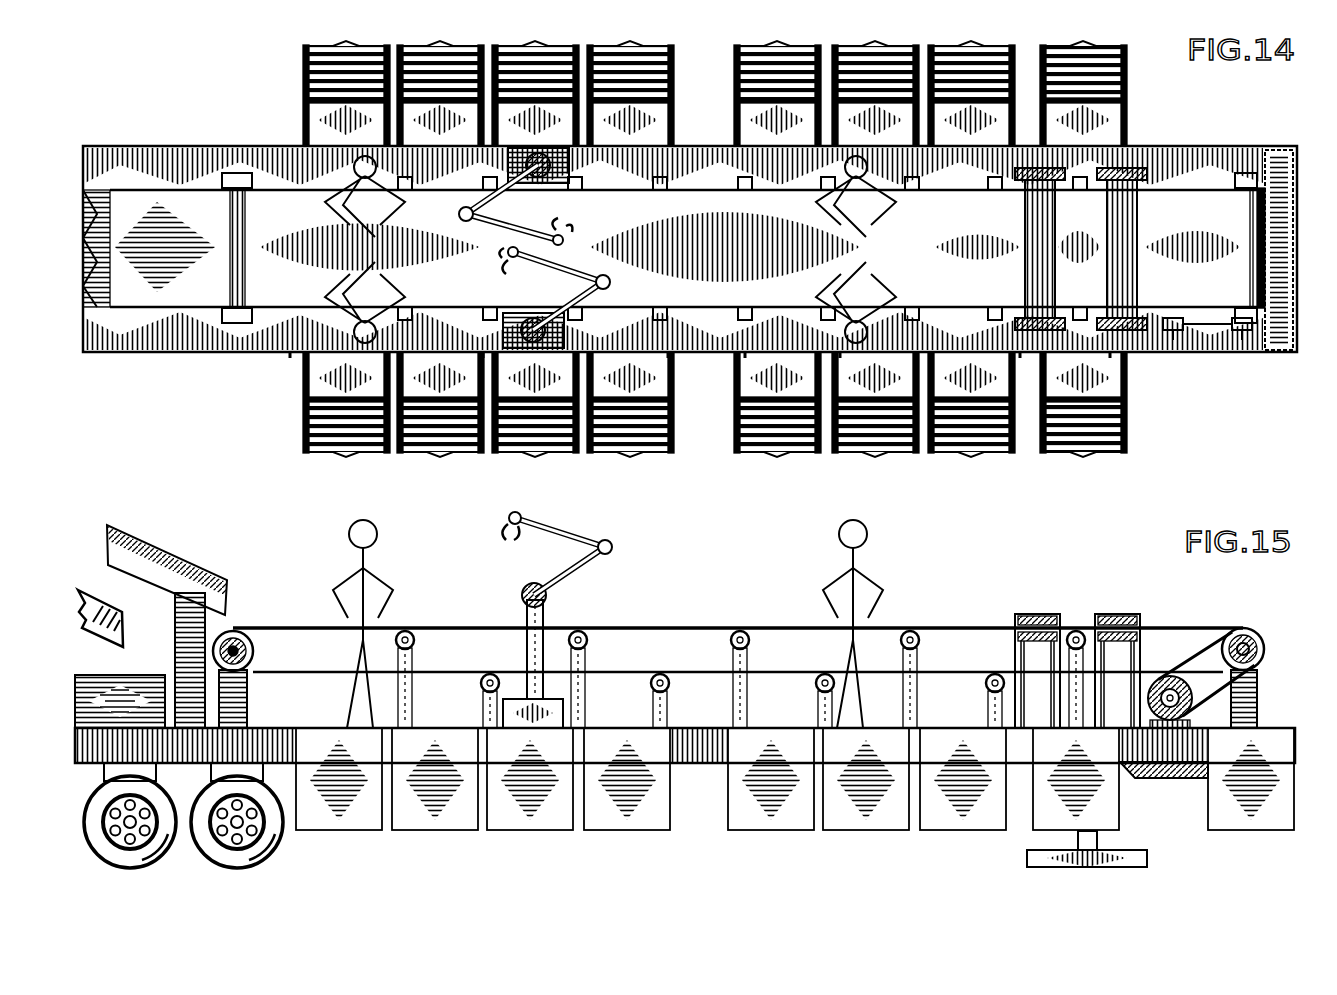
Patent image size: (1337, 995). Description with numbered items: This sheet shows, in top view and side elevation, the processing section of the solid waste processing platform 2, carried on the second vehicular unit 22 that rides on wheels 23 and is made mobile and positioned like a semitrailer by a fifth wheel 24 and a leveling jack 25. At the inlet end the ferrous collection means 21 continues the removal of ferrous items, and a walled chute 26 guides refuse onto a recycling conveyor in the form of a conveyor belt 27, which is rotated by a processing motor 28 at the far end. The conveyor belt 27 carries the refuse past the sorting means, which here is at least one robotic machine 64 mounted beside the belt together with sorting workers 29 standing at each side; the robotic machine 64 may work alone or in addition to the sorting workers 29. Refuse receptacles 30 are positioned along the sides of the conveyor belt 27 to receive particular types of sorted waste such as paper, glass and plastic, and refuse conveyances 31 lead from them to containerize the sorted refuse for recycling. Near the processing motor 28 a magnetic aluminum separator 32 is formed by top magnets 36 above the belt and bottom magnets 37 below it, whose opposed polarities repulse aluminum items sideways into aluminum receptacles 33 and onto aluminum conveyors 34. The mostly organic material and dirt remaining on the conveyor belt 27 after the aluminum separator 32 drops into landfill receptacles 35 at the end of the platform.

In FIG. 14, the solid waste processing platform 2 is at (242, 148).
In FIG. 15, the solid waste processing platform 2 is at (690, 732).
In FIG. 14, the ferrous collection means 21 is at (100, 215).
In FIG. 15, the ferrous collection means 21 is at (160, 623).
In FIG. 14, the second vehicular unit 22 is at (172, 79).
In FIG. 15, the second vehicular unit 22 is at (168, 490).
In FIG. 15, the wheels 23 is at (200, 805).
In FIG. 15, the fifth wheel 24 is at (1162, 778).
In FIG. 15, the leveling jack 25 is at (1125, 850).
In FIG. 14, the walled chute 26 is at (157, 222).
In FIG. 15, the walled chute 26 is at (172, 553).
In FIG. 14, the conveyor belt 27 is at (1202, 212).
In FIG. 15, the conveyor belt 27 is at (695, 628).
In FIG. 14, the processing motor 28 is at (1190, 325).
In FIG. 15, the processing motor 28 is at (1170, 690).
In FIG. 14, the sorting worker 29 is at (360, 280).
In FIG. 15, the sorting worker 29 is at (349, 530).
In FIG. 14, the refuse receptacles 30 is at (735, 128).
In FIG. 15, the refuse receptacles 30 is at (740, 810).
In FIG. 14, the refuse conveyances 31 is at (744, 252).
In FIG. 14, the magnetic aluminum separator 32 is at (1077, 360).
In FIG. 15, the magnetic aluminum separator 32 is at (1077, 590).
In FIG. 14, the aluminum receptacles 33 is at (1108, 120).
In FIG. 15, the aluminum receptacles 33 is at (1040, 805).
In FIG. 14, the aluminum conveyors 34 is at (1108, 72).
In FIG. 14, the landfill receptacles 35 is at (1283, 160).
In FIG. 15, the landfill receptacles 35 is at (1240, 818).
In FIG. 14, the top magnet 36 is at (1118, 230).
In FIG. 15, the top magnet 36 is at (1035, 614).
In FIG. 15, the bottom magnet 37 is at (1020, 641).
In FIG. 14, the robotic machine 64 is at (512, 300).
In FIG. 15, the robotic machine 64 is at (518, 700).